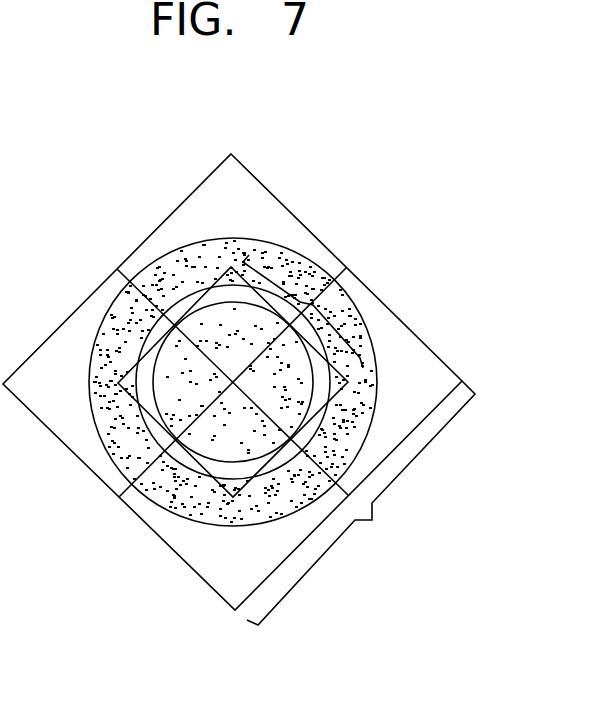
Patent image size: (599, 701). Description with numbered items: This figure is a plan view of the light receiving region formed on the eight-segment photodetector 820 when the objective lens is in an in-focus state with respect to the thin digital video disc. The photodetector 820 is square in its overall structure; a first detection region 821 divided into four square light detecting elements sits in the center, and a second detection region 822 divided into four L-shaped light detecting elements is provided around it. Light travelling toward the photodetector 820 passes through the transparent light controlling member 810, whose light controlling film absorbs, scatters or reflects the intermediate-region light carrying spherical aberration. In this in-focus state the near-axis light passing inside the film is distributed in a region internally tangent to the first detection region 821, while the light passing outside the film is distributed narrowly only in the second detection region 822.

The photodetector 820 is at (395, 226).
The first detection region 821 is at (313, 306).
The light controlling member 810 is at (310, 433).
The second detection region 822 is at (372, 520).